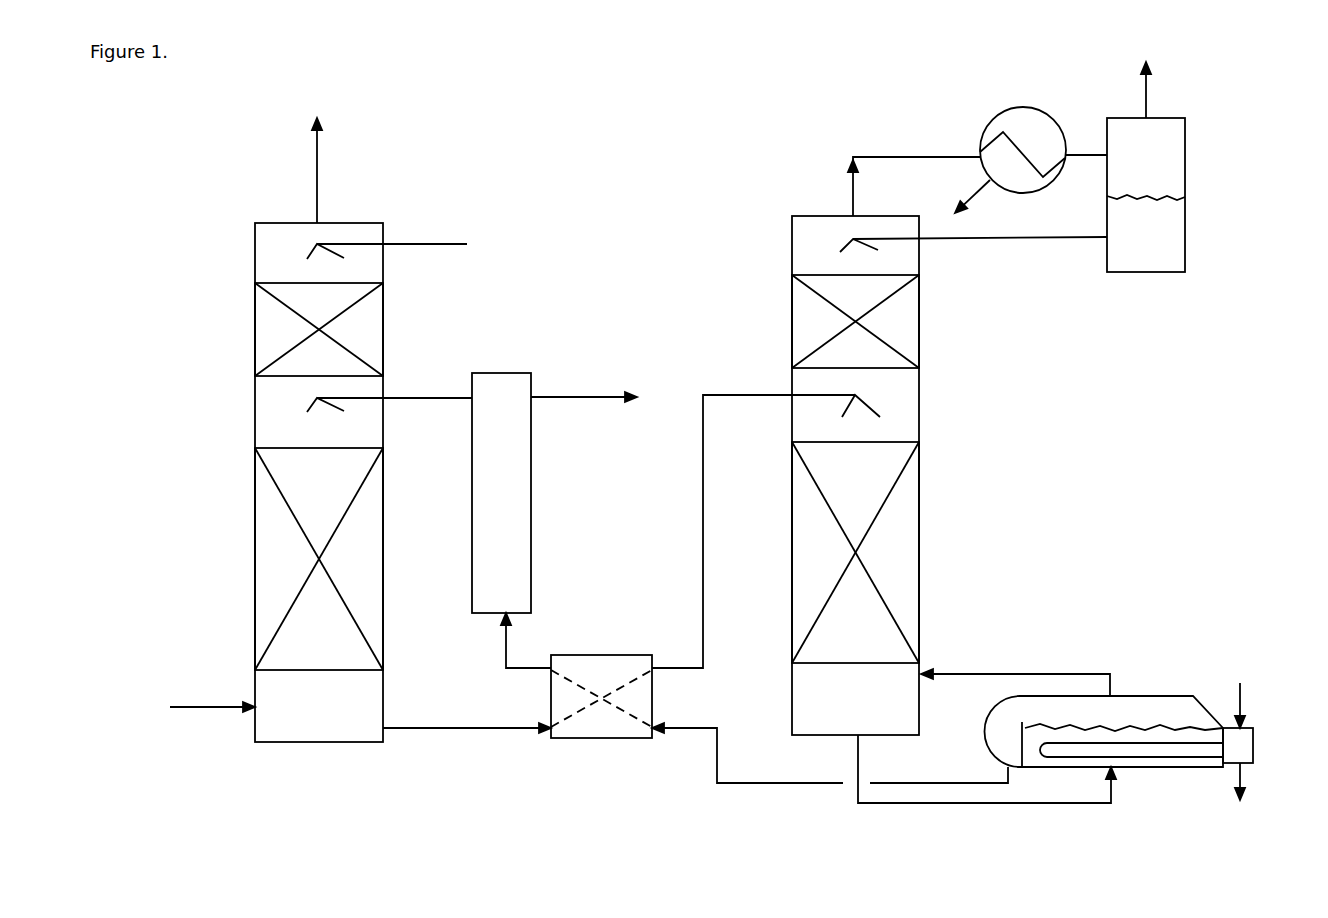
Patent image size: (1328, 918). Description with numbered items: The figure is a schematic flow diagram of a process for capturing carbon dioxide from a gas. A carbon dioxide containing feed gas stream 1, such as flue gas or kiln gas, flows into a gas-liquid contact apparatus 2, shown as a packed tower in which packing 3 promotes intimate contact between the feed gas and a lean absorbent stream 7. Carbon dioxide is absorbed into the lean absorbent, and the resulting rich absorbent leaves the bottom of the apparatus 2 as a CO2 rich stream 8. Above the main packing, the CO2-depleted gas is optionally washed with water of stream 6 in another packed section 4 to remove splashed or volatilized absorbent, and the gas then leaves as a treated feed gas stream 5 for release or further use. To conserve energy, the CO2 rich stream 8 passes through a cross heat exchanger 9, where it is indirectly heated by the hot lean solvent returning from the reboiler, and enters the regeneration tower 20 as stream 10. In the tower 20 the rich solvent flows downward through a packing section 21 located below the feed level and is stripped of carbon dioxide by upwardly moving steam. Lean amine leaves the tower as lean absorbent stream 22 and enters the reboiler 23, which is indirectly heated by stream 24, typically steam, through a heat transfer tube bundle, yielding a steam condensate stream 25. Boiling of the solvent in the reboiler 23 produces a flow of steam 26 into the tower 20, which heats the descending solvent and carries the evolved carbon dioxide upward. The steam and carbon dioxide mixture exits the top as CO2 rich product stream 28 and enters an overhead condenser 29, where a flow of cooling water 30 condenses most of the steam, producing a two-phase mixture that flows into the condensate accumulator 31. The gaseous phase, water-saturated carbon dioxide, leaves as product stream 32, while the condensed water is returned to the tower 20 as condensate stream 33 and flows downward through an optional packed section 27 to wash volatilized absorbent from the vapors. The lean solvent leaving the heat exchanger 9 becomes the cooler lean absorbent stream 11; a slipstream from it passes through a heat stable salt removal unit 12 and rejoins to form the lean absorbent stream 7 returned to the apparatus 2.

The feed gas stream 1 is at (212, 690).
The gas-liquid contact apparatus 2 is at (229, 408).
The packing 3 is at (272, 549).
The packed section 4 is at (268, 328).
The treated feed gas stream 5 is at (337, 170).
The water stream 6 is at (387, 227).
The lean absorbent stream 7 is at (389, 386).
The CO2 rich stream 8 is at (467, 706).
The cross heat exchanger 9 is at (580, 626).
The stream 10 is at (766, 512).
The cooler lean absorbent stream 11 is at (542, 477).
The heat stable salt removal unit 12 is at (578, 383).
The regeneration tower 20 is at (944, 422).
The packing section 21 is at (893, 528).
The lean absorbent stream 22 is at (987, 791).
The reboiler 23 is at (1153, 672).
The stream 24 is at (1241, 703).
The steam condensate stream 25 is at (1216, 785).
The flow of steam 26 is at (1015, 665).
The packed section 27 is at (892, 320).
The CO2 rich product stream 28 is at (878, 186).
The overhead condenser 29 is at (988, 104).
The cooling water 30 is at (1093, 72).
The condensate accumulator 31 is at (1157, 280).
The product stream 32 is at (1174, 90).
The condensate stream 33 is at (973, 228).